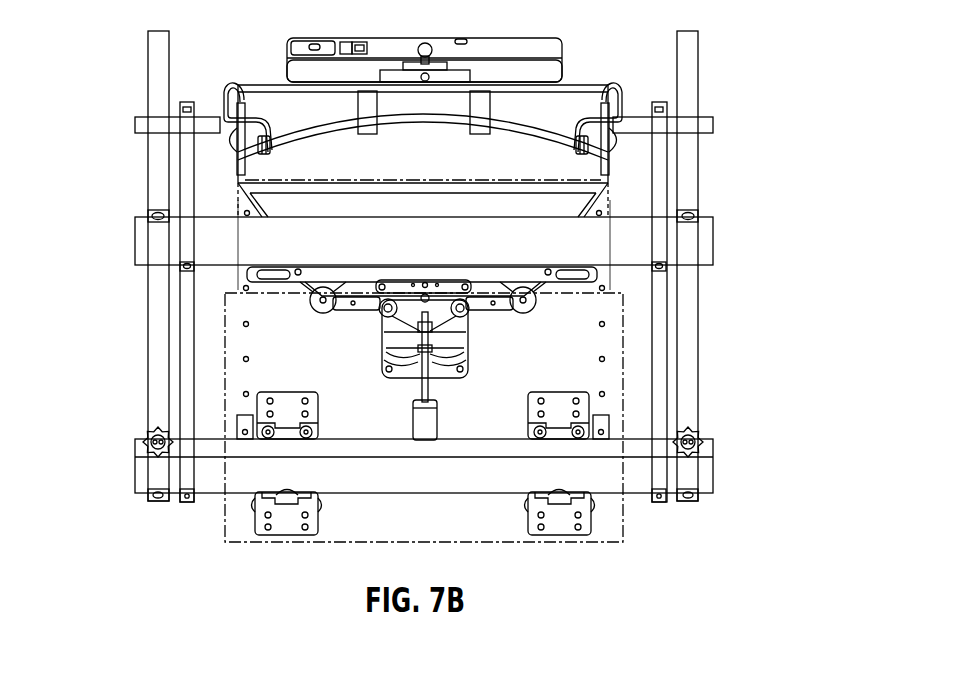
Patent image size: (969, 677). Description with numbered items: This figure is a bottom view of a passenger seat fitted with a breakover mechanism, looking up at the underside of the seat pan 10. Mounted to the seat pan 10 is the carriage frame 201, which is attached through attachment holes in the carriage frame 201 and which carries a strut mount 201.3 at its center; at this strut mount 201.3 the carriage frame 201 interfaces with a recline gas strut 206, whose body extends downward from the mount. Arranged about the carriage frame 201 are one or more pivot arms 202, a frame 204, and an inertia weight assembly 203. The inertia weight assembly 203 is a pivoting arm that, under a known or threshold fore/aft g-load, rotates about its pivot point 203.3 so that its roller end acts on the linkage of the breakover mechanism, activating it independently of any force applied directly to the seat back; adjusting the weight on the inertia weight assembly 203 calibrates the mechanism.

The seat pan 10 is at (600, 372).
The carriage frame 201 is at (448, 377).
The strut mount 201.3 is at (427, 340).
The pivot arm 202 is at (258, 279).
The inertia weight assembly 203 is at (330, 312).
The pivot point 203.3 is at (380, 312).
The frame 204 is at (600, 190).
The recline gas strut 206 is at (417, 430).